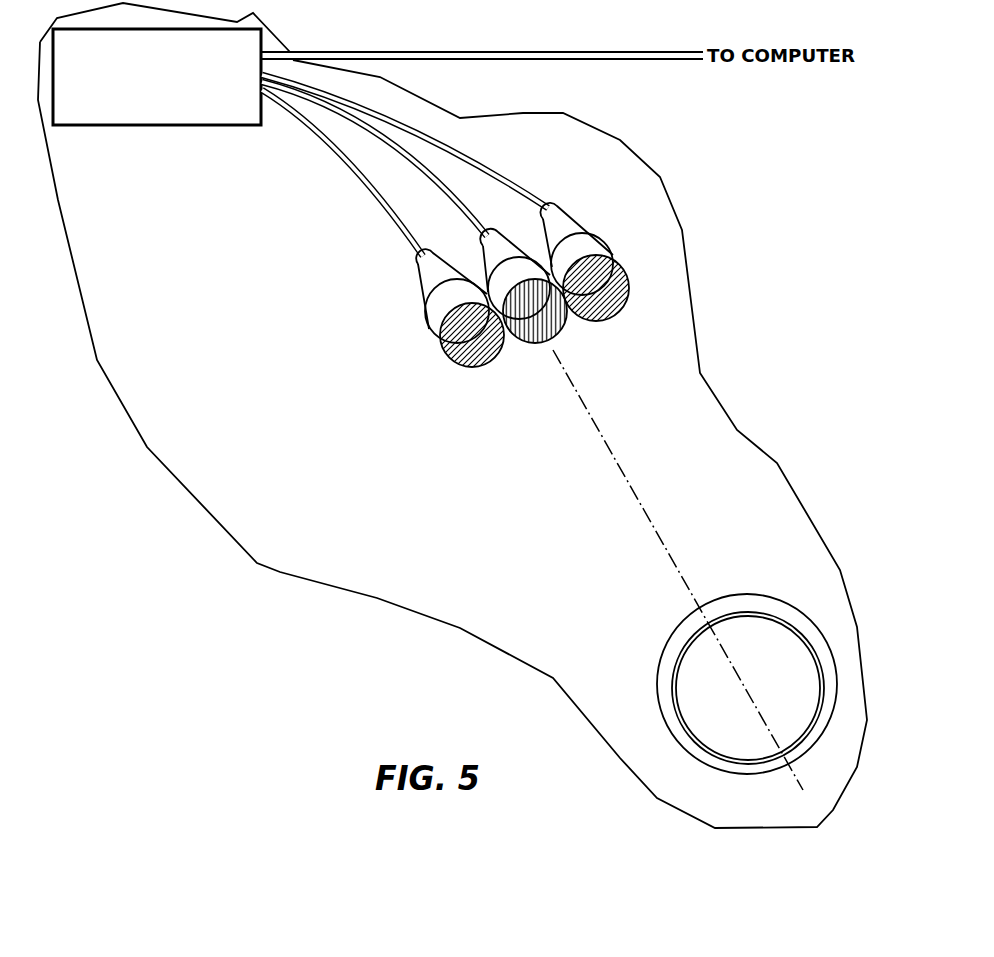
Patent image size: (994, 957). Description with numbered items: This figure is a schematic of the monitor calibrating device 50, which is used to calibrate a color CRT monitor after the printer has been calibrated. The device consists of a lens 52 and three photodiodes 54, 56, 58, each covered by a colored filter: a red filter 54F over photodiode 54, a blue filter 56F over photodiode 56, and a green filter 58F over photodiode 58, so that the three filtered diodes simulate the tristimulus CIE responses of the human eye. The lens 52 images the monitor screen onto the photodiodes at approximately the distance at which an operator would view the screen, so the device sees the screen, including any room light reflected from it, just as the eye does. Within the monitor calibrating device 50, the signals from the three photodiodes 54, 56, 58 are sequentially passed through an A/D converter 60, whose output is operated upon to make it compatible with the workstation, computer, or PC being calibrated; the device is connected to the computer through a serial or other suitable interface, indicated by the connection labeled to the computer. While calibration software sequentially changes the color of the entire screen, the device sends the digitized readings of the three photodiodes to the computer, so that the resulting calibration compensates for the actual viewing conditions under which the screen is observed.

The monitor calibrating device 50 is at (159, 428).
The lens 52 is at (687, 643).
The photodiode 54 is at (437, 300).
The red filter 54F is at (476, 365).
The photodiode 56 is at (512, 266).
The blue filter 56F is at (547, 323).
The photodiode 58 is at (578, 245).
The green filter 58F is at (602, 308).
The A/D converter 60 is at (173, 108).